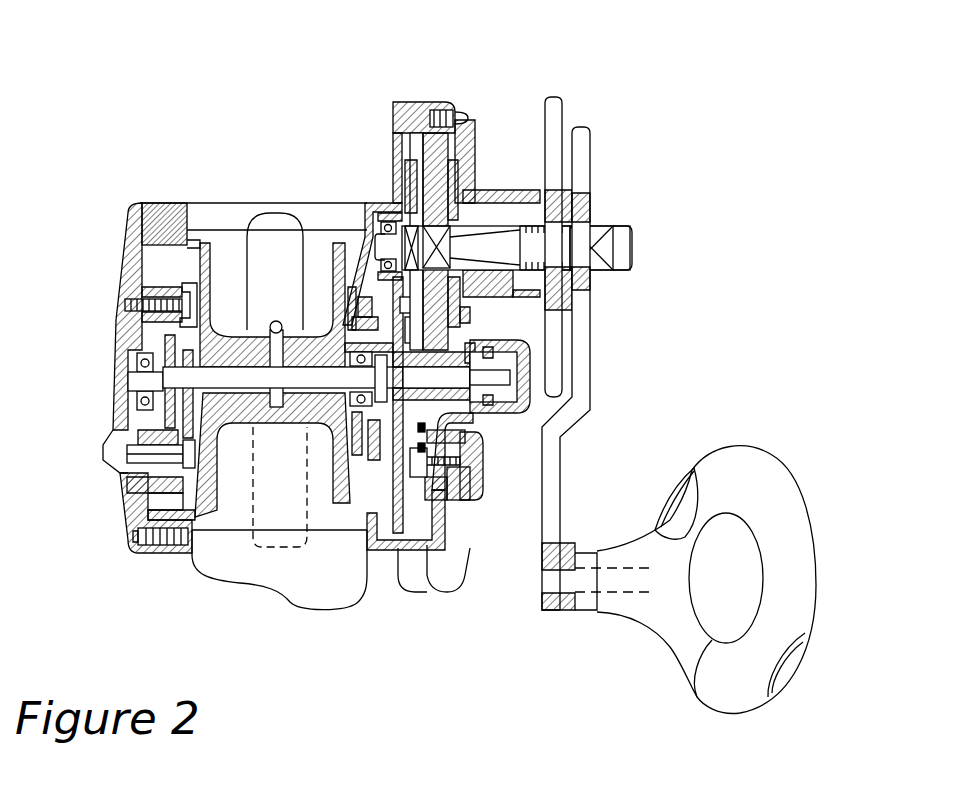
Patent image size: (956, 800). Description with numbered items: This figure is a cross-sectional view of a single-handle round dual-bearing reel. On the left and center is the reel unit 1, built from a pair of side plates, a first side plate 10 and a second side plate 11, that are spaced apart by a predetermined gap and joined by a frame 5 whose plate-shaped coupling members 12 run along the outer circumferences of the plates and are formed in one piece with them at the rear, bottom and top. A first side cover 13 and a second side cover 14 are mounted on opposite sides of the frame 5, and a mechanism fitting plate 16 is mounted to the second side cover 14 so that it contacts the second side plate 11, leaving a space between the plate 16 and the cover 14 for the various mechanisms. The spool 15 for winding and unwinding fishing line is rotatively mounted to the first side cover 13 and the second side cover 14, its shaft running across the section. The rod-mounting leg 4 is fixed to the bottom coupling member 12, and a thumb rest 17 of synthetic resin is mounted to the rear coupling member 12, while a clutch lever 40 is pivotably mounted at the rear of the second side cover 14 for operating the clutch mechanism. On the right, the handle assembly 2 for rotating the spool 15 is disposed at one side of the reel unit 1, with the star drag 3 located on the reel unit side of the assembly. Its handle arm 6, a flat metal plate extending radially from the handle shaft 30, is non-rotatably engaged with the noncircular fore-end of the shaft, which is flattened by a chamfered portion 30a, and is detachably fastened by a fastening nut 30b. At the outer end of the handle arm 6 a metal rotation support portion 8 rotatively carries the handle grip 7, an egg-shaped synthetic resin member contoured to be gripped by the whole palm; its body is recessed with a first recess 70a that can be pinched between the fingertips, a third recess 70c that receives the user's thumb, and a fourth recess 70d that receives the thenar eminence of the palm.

The reel unit 1 is at (323, 102).
The handle assembly 2 is at (699, 336).
The star drag 3 is at (555, 103).
The rod-mounting leg 4 is at (290, 255).
The frame 5 is at (273, 165).
The handle arm 6 is at (600, 335).
The handle grip 7 is at (722, 445).
The rotation support portion 8 is at (560, 553).
The first side plate 10 is at (165, 205).
The second side plate 11 is at (390, 152).
The coupling members 12 is at (240, 215).
The first side cover 13 is at (118, 213).
The second side cover 14 is at (447, 592).
The spool 15 is at (327, 420).
The mechanism fitting plate 16 is at (423, 112).
The thumb rest 17 is at (217, 563).
The handle shaft 30 is at (488, 225).
The chamfered portion 30a is at (598, 221).
The fastening nut 30b is at (605, 227).
The clutch lever 40 is at (467, 580).
The first recess 70a is at (695, 697).
The third recess 70c is at (675, 505).
The fourth recess 70d is at (792, 673).